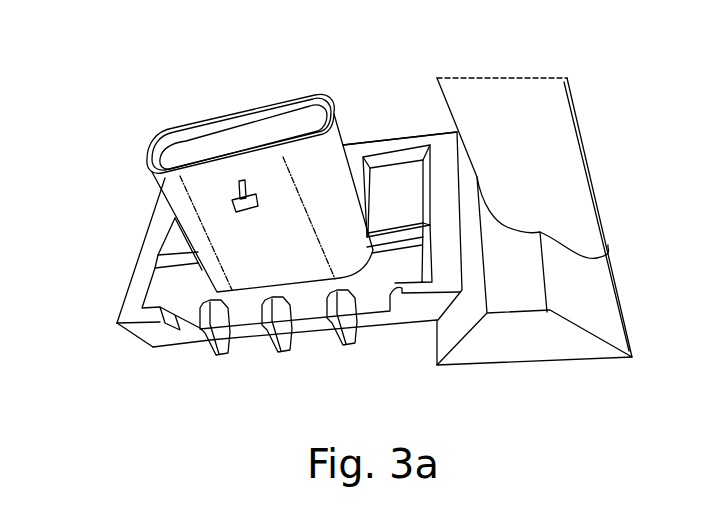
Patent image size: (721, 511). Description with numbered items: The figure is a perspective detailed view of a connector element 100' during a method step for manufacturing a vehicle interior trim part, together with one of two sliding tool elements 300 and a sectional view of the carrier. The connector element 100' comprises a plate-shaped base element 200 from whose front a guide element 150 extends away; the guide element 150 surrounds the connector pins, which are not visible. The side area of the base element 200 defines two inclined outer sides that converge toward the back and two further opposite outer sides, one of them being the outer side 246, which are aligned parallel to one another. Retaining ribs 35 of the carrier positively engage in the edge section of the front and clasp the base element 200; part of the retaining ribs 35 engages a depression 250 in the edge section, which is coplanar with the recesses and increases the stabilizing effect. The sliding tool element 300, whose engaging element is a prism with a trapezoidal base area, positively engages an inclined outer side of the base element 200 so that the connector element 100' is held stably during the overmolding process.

The connector element 100' is at (400, 79).
The guide element 150 is at (198, 182).
The base element 200 is at (168, 282).
The outer side 246 is at (165, 333).
The depression 250 is at (368, 312).
The retaining ribs 35 is at (263, 348).
The sliding tool element 300 is at (505, 98).